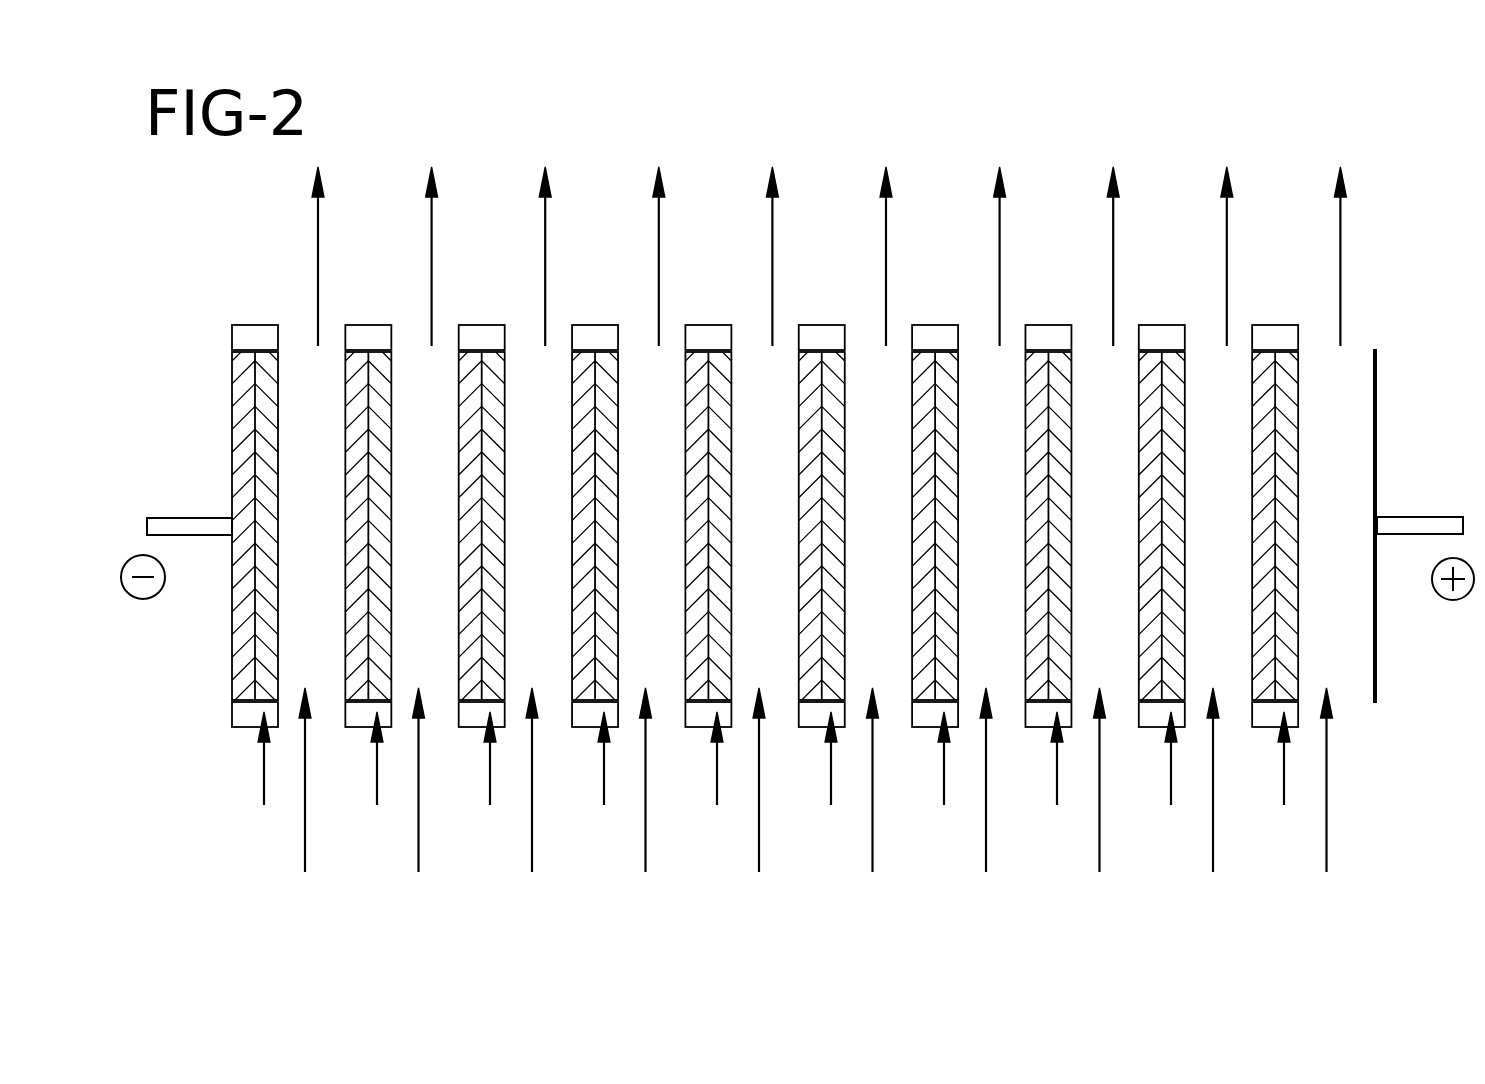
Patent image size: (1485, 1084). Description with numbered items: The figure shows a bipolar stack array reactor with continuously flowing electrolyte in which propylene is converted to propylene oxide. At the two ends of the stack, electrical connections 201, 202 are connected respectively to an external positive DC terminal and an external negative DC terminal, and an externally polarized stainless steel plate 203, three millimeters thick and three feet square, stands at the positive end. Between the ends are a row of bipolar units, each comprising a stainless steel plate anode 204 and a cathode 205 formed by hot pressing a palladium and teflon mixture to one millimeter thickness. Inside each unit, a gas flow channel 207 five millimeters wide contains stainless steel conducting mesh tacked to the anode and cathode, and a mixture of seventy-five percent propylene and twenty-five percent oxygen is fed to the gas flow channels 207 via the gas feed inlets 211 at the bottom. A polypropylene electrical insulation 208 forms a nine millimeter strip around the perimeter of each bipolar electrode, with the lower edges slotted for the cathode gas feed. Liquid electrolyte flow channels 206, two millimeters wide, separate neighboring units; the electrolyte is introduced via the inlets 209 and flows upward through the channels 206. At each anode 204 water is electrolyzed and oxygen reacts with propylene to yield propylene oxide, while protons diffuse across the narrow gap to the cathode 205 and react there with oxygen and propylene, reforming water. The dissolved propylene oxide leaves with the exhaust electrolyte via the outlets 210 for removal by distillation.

The electrical connection 201 is at (1418, 517).
The electrical connection 202 is at (185, 528).
The externally polarized stainless steel plate 203 is at (1376, 402).
The stainless steel plate anode 204 is at (232, 427).
The cathode 205 is at (279, 665).
The liquid electrolyte flow channel 206 is at (438, 373).
The gas flow channel 207 is at (236, 367).
The polypropylene electrical insulation 208 is at (263, 338).
The electrolyte inlet 209 is at (305, 842).
The exhaust electrolyte flow outlet 210 is at (318, 225).
The gas feed inlet 211 is at (264, 793).